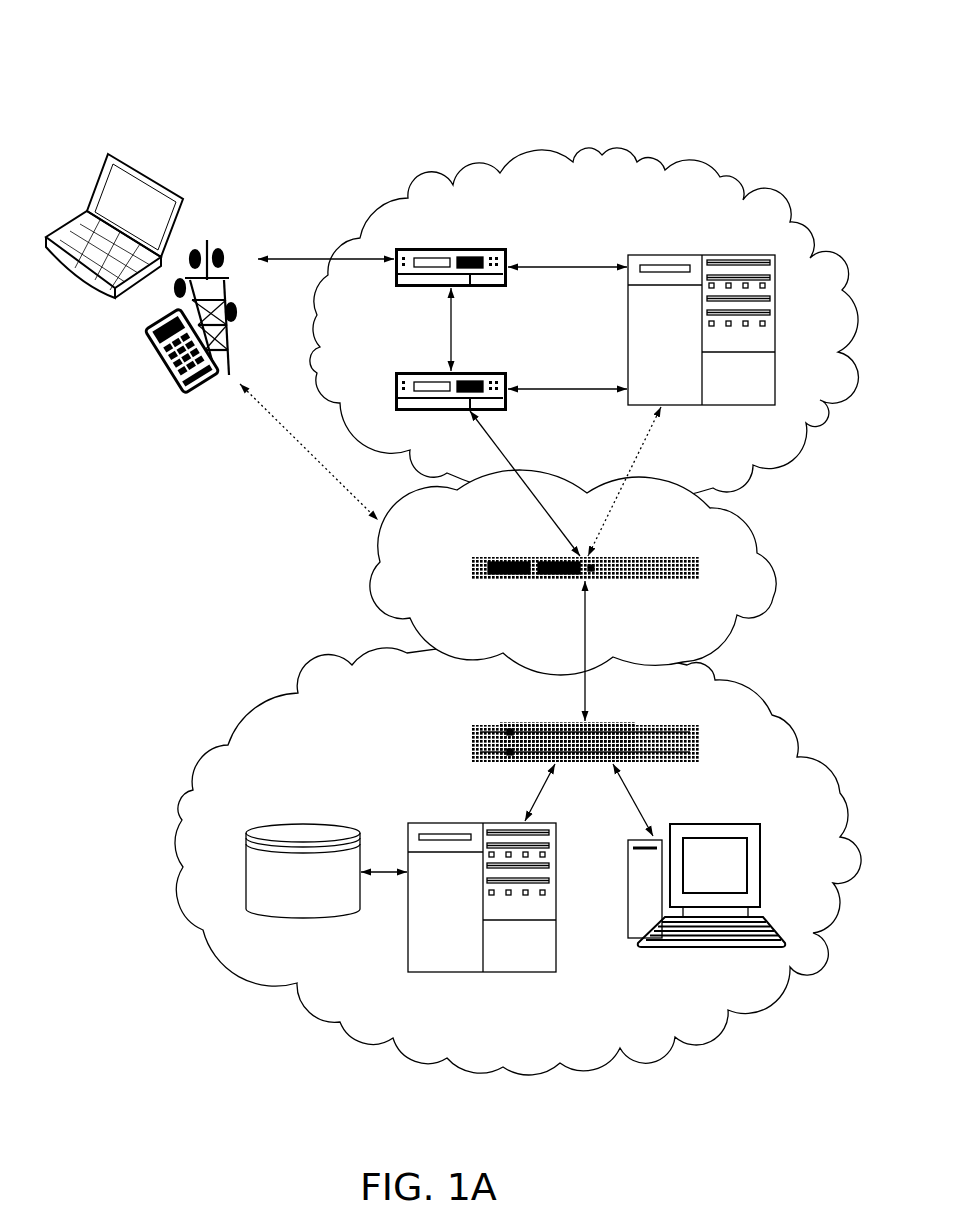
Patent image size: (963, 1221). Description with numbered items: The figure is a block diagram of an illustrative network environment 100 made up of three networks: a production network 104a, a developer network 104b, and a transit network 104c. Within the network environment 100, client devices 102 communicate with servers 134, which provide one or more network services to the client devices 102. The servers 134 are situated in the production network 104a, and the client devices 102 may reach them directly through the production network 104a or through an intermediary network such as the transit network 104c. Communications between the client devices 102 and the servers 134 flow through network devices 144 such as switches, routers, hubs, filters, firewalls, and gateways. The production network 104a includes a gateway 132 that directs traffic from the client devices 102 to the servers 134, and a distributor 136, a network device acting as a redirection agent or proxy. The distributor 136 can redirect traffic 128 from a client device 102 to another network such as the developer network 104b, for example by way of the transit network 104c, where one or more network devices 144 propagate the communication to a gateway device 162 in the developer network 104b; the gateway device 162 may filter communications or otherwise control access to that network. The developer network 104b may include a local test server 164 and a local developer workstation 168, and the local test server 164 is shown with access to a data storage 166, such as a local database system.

The network environment 100 is at (135, 55).
The client devices 102 is at (141, 274).
The production network 104a is at (702, 160).
The developer network 104b is at (763, 681).
The transit network 104c is at (750, 520).
The traffic 128 is at (325, 472).
The gateway 132 is at (451, 251).
The servers 134 is at (701, 313).
The distributor 136 is at (439, 376).
The network devices 144 is at (558, 564).
The gateway device 162 is at (556, 740).
The local test server 164 is at (482, 916).
The data storage 166 is at (303, 888).
The local developer workstation 168 is at (706, 906).